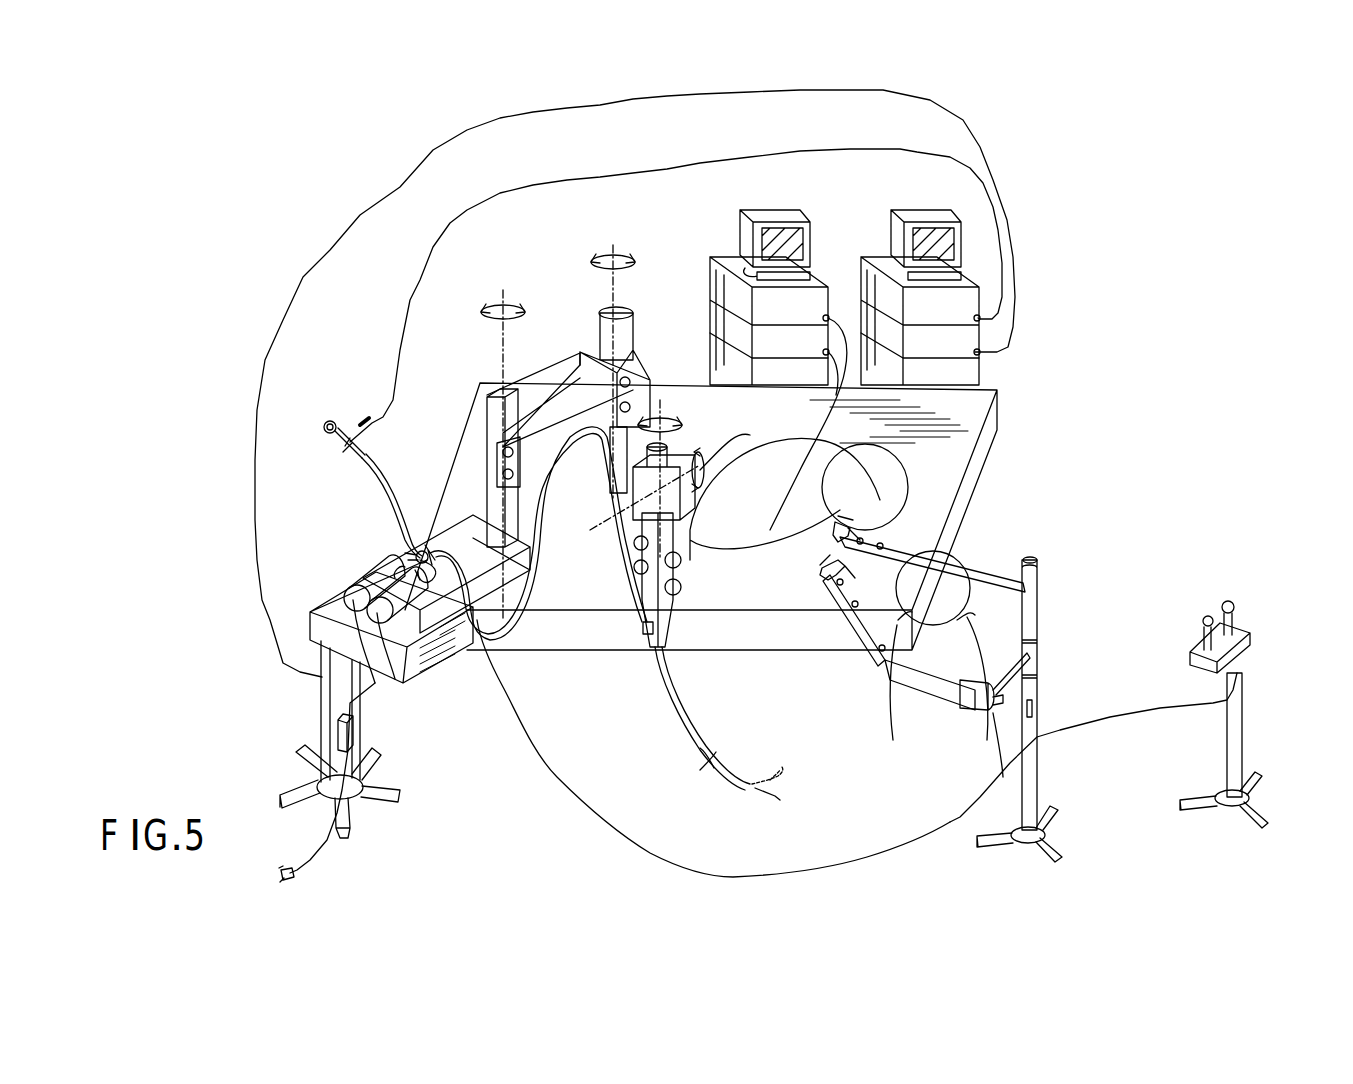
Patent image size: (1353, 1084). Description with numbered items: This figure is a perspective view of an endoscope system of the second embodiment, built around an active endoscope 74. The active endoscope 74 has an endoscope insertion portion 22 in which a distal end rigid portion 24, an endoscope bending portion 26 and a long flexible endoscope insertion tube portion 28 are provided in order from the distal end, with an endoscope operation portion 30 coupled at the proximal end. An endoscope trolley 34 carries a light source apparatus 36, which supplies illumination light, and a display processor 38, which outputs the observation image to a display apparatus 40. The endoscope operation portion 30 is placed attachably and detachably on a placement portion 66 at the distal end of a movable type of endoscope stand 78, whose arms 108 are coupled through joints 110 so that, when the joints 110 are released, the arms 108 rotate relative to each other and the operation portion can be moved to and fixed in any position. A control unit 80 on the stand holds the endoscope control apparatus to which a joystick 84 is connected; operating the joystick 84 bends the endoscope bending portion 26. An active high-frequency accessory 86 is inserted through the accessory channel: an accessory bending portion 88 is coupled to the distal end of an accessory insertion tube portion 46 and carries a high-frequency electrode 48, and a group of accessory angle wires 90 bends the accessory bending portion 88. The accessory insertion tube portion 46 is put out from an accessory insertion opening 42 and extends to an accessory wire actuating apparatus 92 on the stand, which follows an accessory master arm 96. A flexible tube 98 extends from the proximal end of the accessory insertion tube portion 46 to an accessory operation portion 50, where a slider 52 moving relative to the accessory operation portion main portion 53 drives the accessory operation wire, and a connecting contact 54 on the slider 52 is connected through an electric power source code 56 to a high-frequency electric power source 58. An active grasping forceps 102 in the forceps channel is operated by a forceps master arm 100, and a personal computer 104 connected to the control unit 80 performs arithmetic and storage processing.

The endoscope insertion portion 22 is at (734, 746).
The distal end rigid portion 24 is at (742, 795).
The endoscope bending portion 26 is at (720, 780).
The endoscope insertion tube portion 28 is at (672, 718).
The endoscope operation portion 30 is at (668, 550).
The endoscope trolley 34 is at (845, 281).
The light source apparatus 36 is at (806, 354).
The display processor 38 is at (806, 320).
The display apparatus 40 is at (795, 210).
The accessory insertion opening 42 is at (632, 634).
The accessory insertion tube portion 46 is at (452, 560).
The high-frequency electrode 48 is at (778, 800).
The accessory operation portion 50 is at (367, 450).
The slider 52 is at (327, 435).
The accessory operation portion main portion 53 is at (365, 448).
The connecting contact 54 is at (365, 418).
The electric power source code 56 is at (428, 268).
The high-frequency electric power source 58 is at (950, 354).
The placement portion 66 is at (680, 525).
The active endoscope 74 is at (697, 640).
The movable type of endoscope stand 78 is at (568, 460).
The control unit 80 is at (400, 685).
The joystick 84 is at (1270, 616).
The active high-frequency accessory 86 is at (800, 797).
The accessory bending portion 88 is at (767, 797).
The group of accessory angle wires 90 is at (380, 528).
The accessory wire actuating apparatus 92 is at (358, 578).
The accessory master arm 96 is at (1018, 526).
The flexible tube 98 is at (392, 515).
The forceps master arm 100 is at (845, 695).
The active grasping forceps 102 is at (780, 740).
The personal computer 104 is at (953, 320).
The arms 108 is at (495, 410).
The joints 110 is at (500, 452).